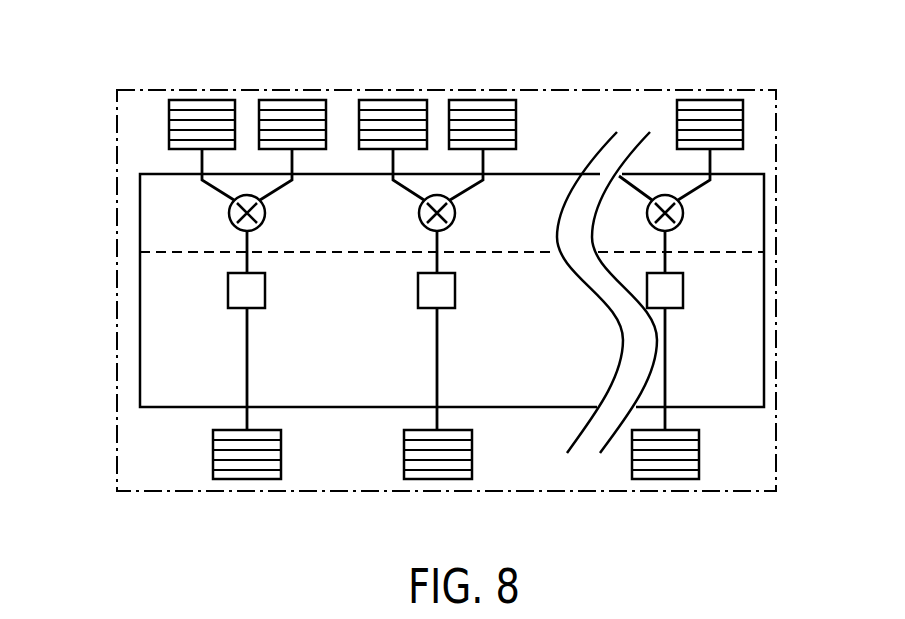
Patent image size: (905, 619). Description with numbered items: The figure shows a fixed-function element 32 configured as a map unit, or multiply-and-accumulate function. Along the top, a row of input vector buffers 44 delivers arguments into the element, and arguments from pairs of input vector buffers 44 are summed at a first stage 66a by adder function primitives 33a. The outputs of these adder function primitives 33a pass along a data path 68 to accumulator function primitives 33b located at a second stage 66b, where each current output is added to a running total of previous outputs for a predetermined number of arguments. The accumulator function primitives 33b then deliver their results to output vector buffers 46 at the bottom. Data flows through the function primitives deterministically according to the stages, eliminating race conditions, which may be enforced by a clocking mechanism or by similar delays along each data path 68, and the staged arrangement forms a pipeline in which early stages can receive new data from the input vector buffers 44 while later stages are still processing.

The fixed-function element 32 is at (116, 117).
The input vector buffers 44 is at (292, 100).
The adder function primitives 33a is at (230, 208).
The accumulator function primitives 33b is at (228, 292).
The data path 68 is at (438, 238).
The first stage 66a is at (760, 212).
The second stage 66b is at (760, 312).
The output vector buffers 46 is at (404, 453).